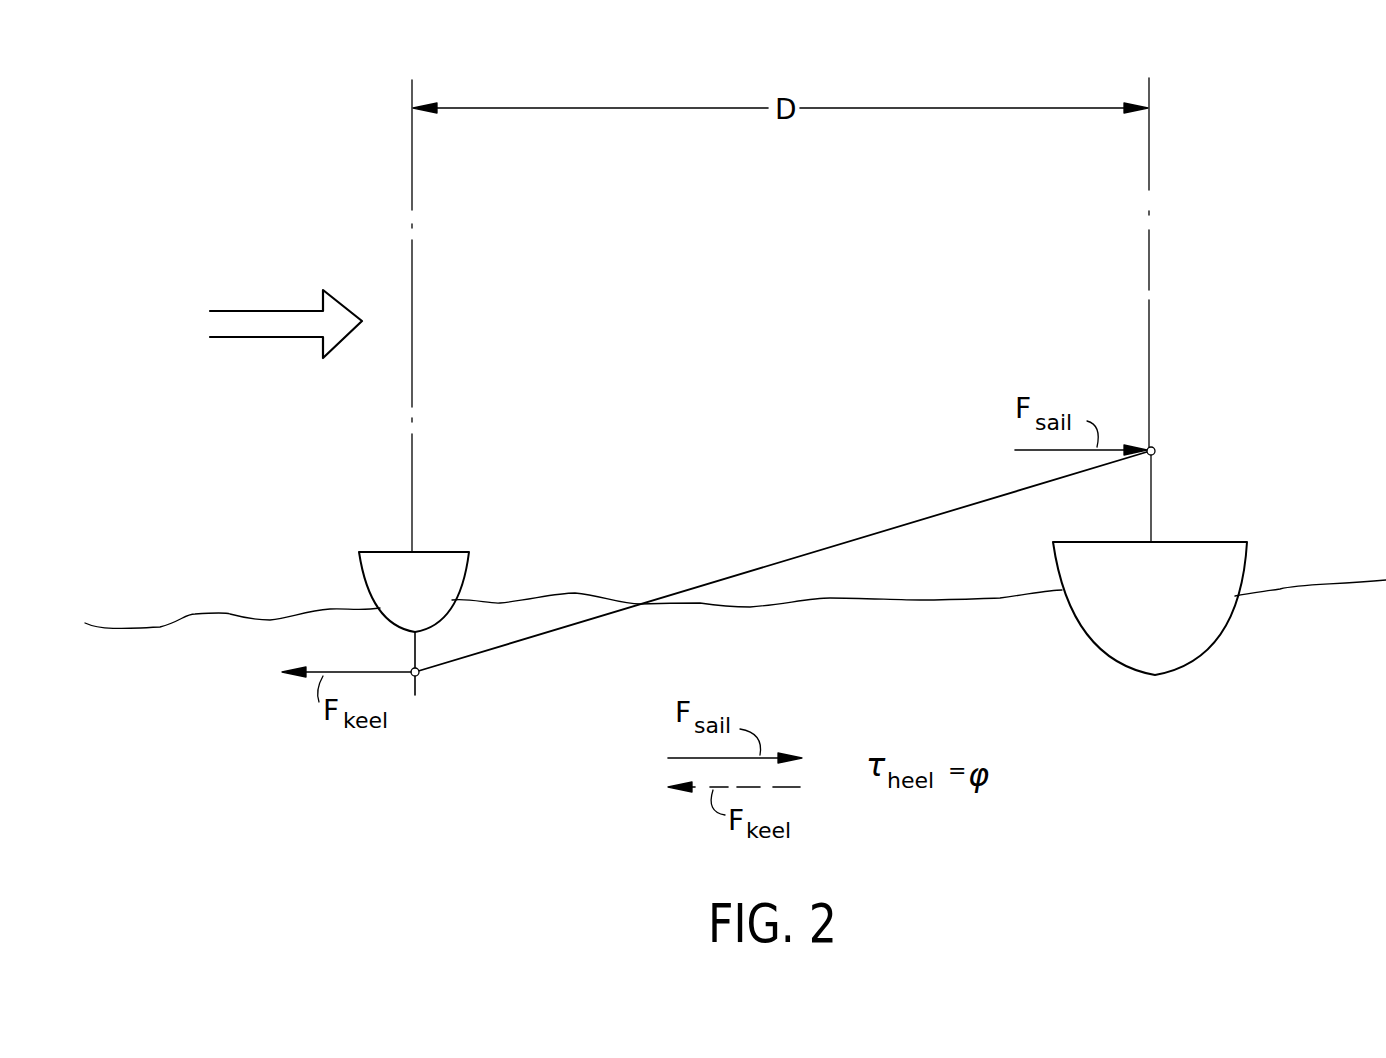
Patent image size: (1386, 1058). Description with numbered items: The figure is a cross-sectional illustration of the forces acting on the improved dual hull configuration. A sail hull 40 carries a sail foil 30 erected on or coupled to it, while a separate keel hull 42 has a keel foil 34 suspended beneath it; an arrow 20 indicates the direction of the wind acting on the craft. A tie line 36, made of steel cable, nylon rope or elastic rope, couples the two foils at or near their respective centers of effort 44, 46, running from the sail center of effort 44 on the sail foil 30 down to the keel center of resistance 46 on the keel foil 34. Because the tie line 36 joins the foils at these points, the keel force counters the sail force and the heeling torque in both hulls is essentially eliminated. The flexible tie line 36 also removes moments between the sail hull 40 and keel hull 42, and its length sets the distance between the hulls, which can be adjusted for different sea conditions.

The wind direction arrow 20 is at (260, 311).
The sail foil 30 is at (1150, 355).
The keel foil 34 is at (419, 680).
The tie line 36 is at (810, 556).
The sail hull 40 is at (1175, 614).
The keel hull 42 is at (436, 599).
The center of effort of the sail 44 is at (1158, 448).
The center of effort (center of resistance) of the keel 46 is at (411, 669).